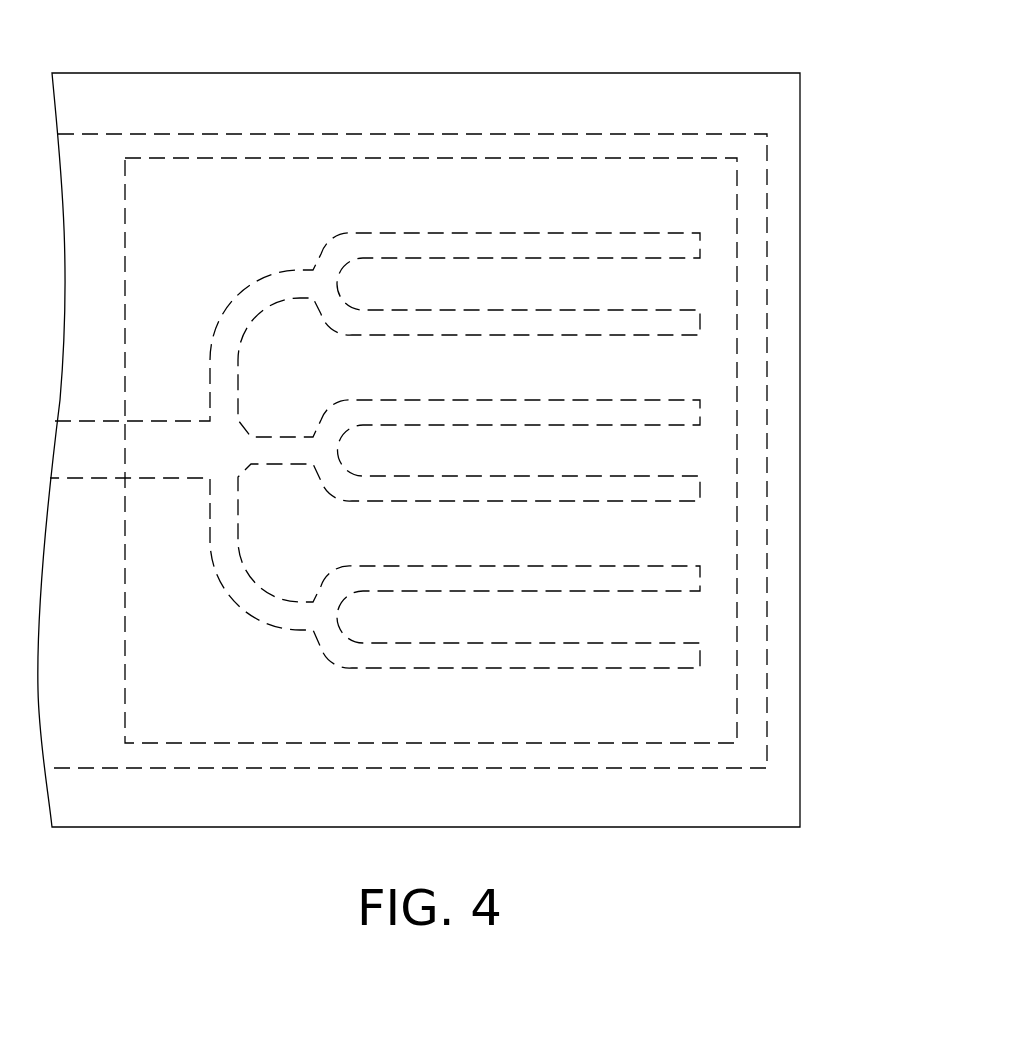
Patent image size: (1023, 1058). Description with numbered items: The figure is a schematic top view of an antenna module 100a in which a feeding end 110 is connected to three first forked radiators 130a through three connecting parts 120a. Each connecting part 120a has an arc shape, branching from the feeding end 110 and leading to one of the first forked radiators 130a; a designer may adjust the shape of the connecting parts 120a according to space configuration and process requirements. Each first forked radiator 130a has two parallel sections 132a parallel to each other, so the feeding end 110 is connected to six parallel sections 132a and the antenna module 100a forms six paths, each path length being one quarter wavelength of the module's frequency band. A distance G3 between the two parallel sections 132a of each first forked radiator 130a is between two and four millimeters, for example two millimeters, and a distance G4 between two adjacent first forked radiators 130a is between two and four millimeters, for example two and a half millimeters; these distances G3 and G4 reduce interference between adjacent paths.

The antenna module 100a is at (925, 105).
The feeding end 110 is at (168, 448).
The connecting part 120a is at (272, 297).
The parallel section 132a is at (686, 246).
The first forked radiator 130a is at (878, 230).
The distance between the two parallel sections G3 is at (427, 260).
The distance between two adjacent first forked radiators G4 is at (507, 337).